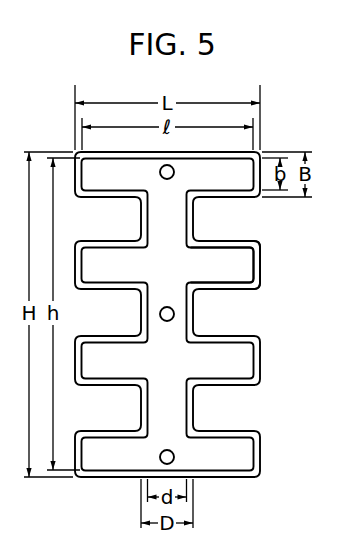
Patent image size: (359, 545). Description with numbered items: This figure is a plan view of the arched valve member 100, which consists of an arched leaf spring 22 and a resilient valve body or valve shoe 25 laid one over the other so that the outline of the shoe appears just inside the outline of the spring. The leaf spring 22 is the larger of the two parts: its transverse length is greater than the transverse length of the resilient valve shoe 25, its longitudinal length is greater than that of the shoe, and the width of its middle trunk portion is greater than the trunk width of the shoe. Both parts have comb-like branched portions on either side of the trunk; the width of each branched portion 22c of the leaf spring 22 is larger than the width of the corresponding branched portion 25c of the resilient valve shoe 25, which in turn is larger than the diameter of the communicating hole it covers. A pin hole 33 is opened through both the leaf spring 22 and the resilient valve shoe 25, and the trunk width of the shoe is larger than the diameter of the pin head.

The arched valve member 100 is at (205, 287).
The arched leaf spring 22 is at (191, 395).
The resilient valve shoe 25 is at (184, 418).
The branched portion of the leaf spring 22c is at (261, 276).
The branched portion of the resilient valve shoe 25c is at (257, 257).
The pin hole 33 is at (174, 314).